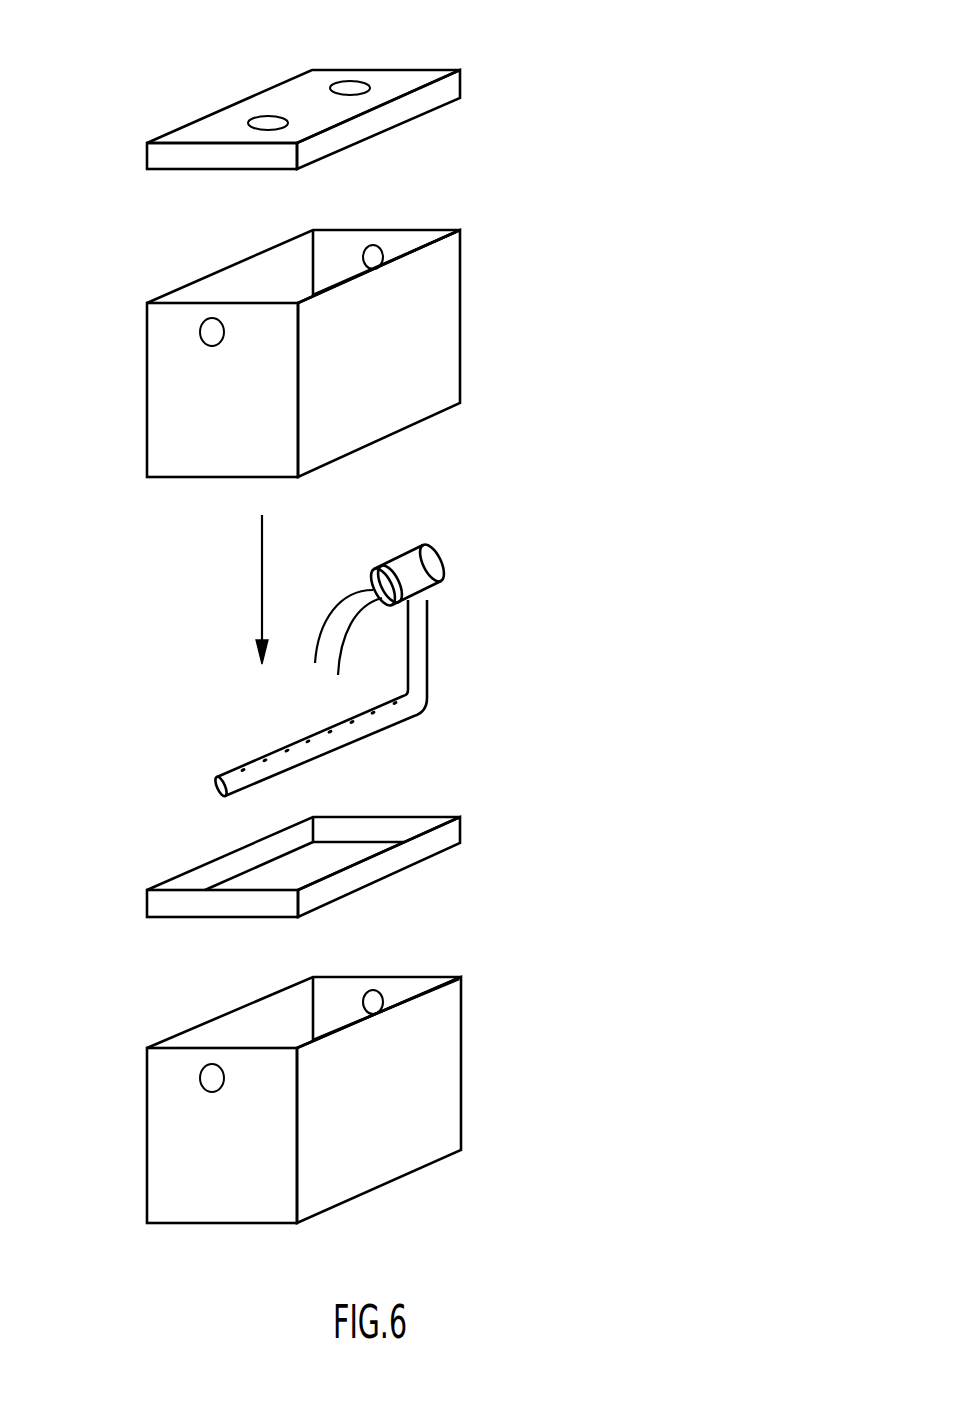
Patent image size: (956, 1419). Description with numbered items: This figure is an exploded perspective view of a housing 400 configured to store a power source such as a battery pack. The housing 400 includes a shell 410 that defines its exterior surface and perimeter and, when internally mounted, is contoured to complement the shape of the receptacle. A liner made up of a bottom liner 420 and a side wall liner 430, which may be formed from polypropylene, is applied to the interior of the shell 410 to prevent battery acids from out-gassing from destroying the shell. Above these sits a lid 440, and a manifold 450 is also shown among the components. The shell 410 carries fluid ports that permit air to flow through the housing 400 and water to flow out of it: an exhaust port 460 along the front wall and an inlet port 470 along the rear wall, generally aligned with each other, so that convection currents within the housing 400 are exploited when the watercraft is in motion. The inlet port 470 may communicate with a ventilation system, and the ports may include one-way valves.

The housing 400 is at (598, 0).
The shell 410 is at (400, 1109).
The bottom liner 420 is at (462, 828).
The side wall liner 430 is at (438, 348).
The lid 440 is at (461, 82).
The manifold 450 is at (428, 642).
The exhaust port 460 is at (208, 1080).
The inlet port 470 is at (378, 992).